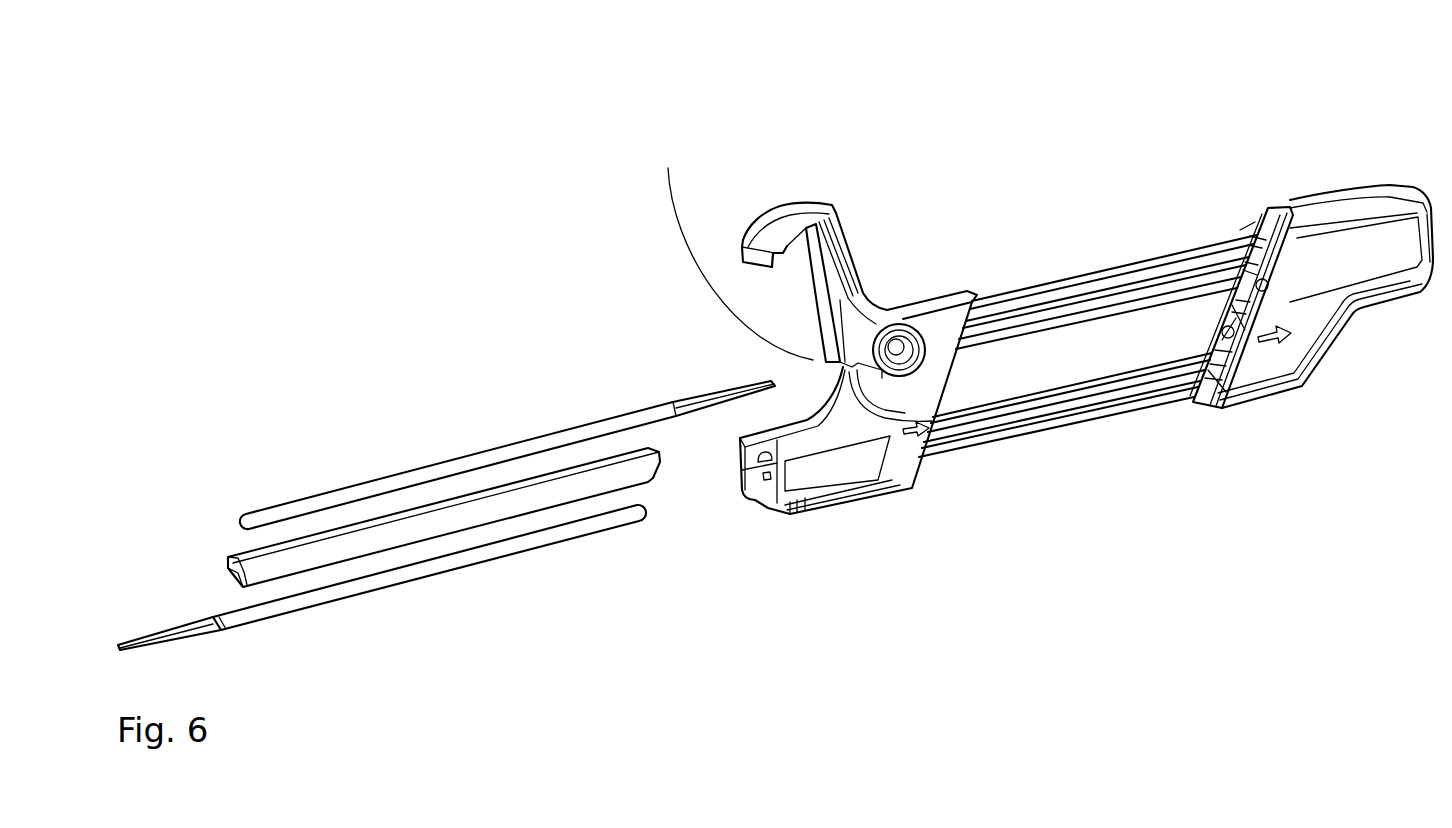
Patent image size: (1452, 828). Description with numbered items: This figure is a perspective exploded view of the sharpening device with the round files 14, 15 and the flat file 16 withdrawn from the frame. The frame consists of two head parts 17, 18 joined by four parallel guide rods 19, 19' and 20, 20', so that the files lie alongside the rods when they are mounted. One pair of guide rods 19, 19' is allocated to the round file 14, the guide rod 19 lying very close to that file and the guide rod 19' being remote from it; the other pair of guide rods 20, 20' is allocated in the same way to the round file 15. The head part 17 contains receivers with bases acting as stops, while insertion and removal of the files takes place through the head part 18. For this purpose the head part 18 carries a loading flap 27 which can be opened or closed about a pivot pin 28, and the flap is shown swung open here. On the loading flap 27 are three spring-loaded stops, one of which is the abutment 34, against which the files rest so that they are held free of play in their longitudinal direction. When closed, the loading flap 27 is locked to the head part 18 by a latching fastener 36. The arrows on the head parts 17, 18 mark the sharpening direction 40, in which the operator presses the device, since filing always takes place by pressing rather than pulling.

The round file 14 is at (446, 564).
The round file 15 is at (403, 476).
The flat file 16 is at (507, 500).
The head part 17 is at (1388, 306).
The head part 18 is at (840, 510).
The guide rod 19 is at (1059, 454).
The guide rod 19' is at (1111, 263).
The guide rod 20 is at (1101, 266).
The guide rod 20' is at (1070, 428).
The loading flap 27 is at (798, 212).
The pivot pin 28 is at (906, 324).
The abutment 34 is at (733, 248).
The latching fastener 36 is at (773, 253).
The direction 40 is at (903, 440).